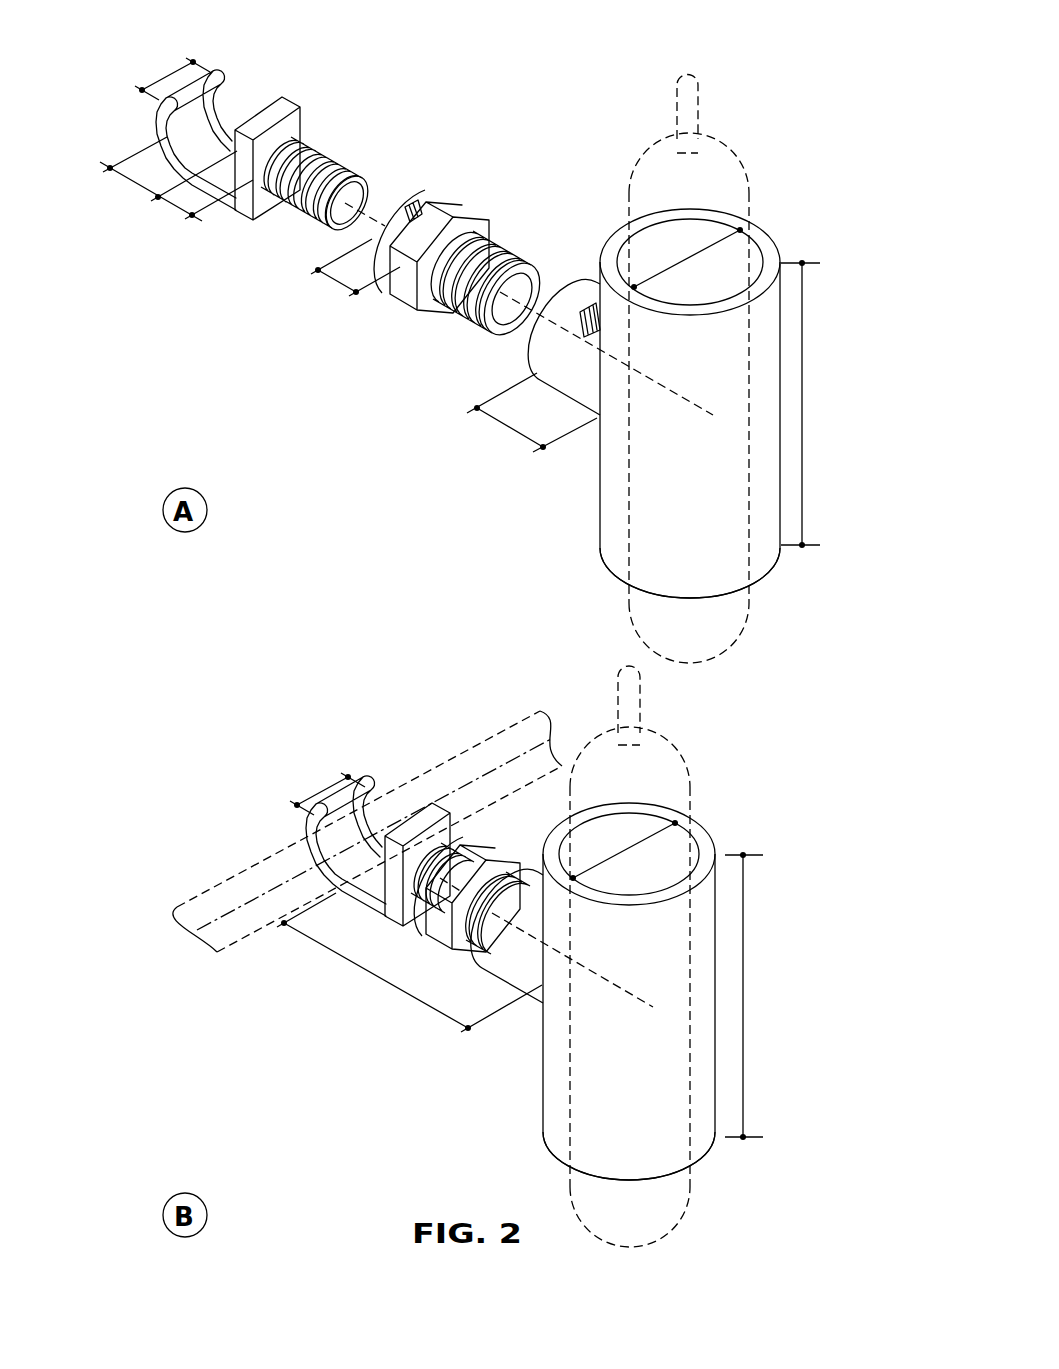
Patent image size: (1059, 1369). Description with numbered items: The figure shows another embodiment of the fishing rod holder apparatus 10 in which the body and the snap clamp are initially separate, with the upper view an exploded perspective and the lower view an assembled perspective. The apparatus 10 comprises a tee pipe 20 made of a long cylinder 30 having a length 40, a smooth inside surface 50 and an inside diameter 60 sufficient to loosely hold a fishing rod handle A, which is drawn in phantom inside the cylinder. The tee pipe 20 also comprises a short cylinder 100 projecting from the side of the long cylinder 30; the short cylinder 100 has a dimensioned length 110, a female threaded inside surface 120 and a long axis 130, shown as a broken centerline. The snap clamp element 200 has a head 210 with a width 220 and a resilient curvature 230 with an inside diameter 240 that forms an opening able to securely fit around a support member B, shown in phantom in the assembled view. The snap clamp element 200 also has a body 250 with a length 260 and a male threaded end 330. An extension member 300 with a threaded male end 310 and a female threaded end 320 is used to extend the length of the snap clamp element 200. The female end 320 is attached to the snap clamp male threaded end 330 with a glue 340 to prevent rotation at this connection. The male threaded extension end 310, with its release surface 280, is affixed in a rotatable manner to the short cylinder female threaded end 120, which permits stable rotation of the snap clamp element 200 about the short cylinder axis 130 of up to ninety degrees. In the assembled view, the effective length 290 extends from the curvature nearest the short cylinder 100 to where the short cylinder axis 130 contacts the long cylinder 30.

The fishing rod holder apparatus 10 is at (372, 382).
The tee pipe 20 is at (607, 456).
The long cylinder 30 is at (757, 545).
The length 40 is at (803, 385).
The inside surface 50 is at (620, 257).
The inside diameter 60 is at (690, 262).
The short cylinder 100 is at (550, 358).
The boss length 110 is at (507, 430).
The female threaded inside surface 120 is at (585, 305).
The long axis 130 is at (660, 365).
The snap clamp element 200 is at (312, 472).
The head 210 is at (275, 102).
The width 220 is at (170, 76).
The resilient curvature 230 is at (158, 132).
The inside diameter 240 is at (132, 181).
The body 250 is at (380, 904).
The length 260 is at (177, 207).
The release surface 280 is at (465, 303).
The effective length 290 is at (373, 972).
The extension member 300 is at (465, 215).
The threaded male end 310 is at (512, 258).
The female threaded end 320 is at (411, 204).
The male threaded end 330 is at (330, 168).
The glue 340 is at (366, 240).
The fishing rod handle A is at (750, 186).
The support member B is at (227, 880).